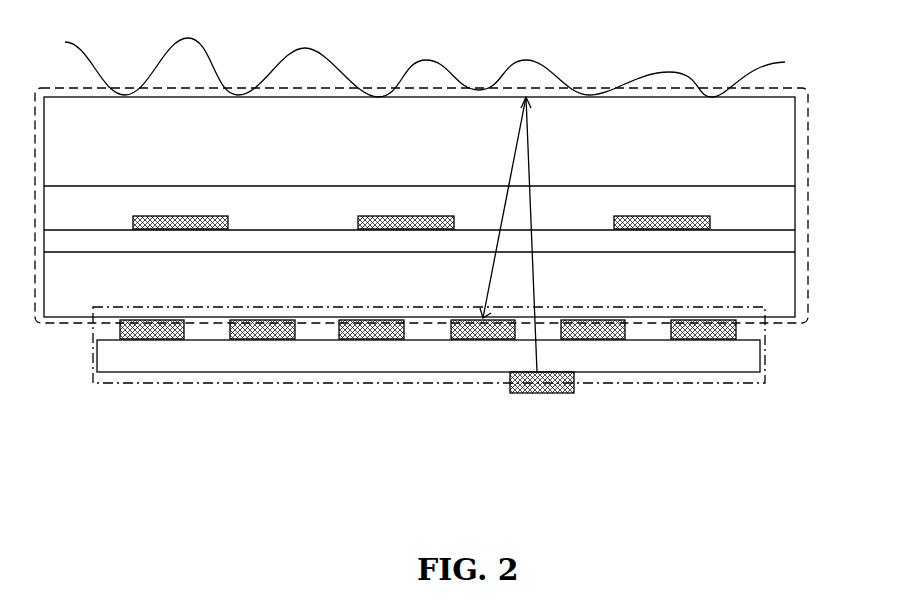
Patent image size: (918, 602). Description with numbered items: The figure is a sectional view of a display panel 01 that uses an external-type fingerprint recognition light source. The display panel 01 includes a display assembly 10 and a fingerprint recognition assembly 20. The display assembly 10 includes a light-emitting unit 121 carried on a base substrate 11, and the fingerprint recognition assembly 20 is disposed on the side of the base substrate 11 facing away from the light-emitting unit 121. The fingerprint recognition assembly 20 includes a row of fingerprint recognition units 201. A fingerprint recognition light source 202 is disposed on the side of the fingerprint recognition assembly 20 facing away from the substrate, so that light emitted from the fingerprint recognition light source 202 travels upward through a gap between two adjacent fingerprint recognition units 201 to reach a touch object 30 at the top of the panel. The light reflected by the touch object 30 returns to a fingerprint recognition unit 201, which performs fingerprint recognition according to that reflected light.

The display panel 01 is at (40, 63).
The display assembly 10 is at (474, 205).
The base substrate 11 is at (795, 288).
The light-emitting unit 121 is at (650, 216).
The fingerprint recognition assembly 20 is at (502, 387).
The fingerprint recognition unit 201 is at (700, 333).
The fingerprint recognition light source 202 is at (552, 393).
The touch object 30 is at (769, 63).